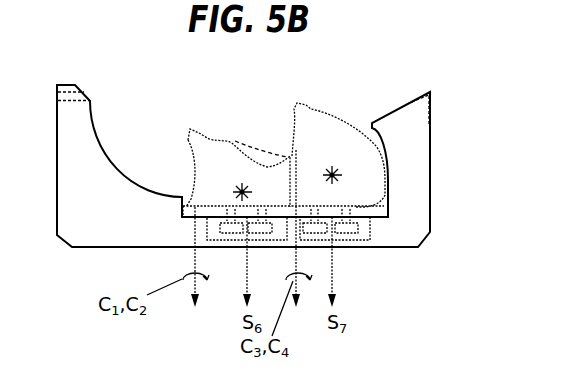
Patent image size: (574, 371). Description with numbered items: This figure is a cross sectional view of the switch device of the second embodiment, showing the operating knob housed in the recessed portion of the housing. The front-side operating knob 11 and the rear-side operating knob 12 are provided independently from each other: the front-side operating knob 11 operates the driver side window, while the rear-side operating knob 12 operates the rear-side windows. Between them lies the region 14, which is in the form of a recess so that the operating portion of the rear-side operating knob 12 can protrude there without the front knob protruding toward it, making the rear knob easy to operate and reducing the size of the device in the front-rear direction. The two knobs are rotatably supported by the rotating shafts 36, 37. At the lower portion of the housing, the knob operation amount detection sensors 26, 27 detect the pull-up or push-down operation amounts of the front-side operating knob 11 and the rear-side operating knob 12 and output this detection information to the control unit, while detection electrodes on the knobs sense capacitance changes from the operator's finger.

The front-side operating knob 11 is at (207, 143).
The rear-side operating knob 12 is at (308, 117).
The region 14 is at (257, 144).
The rotating shaft 36 is at (239, 189).
The rotating shaft 37 is at (334, 174).
The knob operation amount detection sensor 26 is at (210, 241).
The knob operation amount detection sensor 27 is at (367, 240).